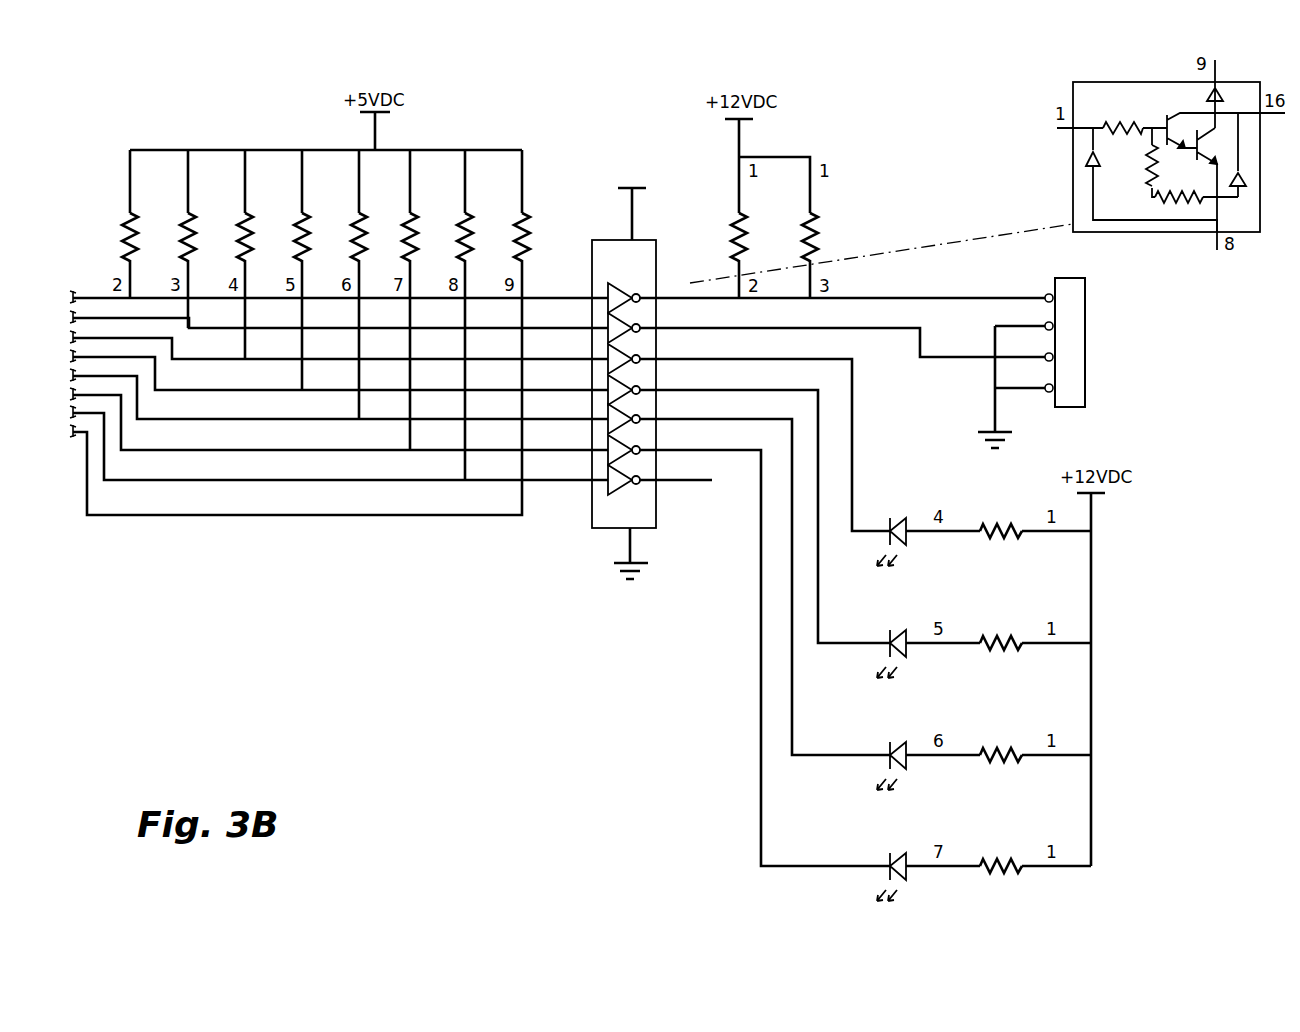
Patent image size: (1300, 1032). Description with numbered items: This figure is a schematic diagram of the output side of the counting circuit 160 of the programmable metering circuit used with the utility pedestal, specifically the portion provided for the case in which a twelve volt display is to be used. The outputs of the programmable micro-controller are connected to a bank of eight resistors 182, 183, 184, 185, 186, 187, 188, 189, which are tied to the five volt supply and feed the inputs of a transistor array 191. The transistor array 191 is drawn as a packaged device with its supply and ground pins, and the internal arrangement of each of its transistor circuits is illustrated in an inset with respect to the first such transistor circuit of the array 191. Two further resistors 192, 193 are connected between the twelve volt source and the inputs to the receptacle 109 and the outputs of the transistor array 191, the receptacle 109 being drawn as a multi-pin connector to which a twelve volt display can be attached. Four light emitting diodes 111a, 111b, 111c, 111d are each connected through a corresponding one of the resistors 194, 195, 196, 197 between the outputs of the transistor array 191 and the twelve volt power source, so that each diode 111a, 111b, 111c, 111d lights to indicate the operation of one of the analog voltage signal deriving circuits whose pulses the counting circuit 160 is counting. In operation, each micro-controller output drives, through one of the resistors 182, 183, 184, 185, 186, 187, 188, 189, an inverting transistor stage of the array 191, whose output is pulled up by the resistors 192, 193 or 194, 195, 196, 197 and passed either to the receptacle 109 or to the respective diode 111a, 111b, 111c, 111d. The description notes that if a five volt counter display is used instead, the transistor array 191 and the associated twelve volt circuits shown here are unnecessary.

The receptacle 109 is at (1086, 398).
The light emitting diode 111a is at (910, 520).
The light emitting diode 111b is at (910, 632).
The light emitting diode 111c is at (910, 744).
The light emitting diode 111d is at (910, 855).
The counting circuit 160 is at (595, 140).
The resistor 182 is at (125, 238).
The resistor 183 is at (183, 238).
The resistor 184 is at (240, 238).
The resistor 185 is at (297, 238).
The resistor 186 is at (354, 238).
The resistor 187 is at (405, 238).
The resistor 188 is at (460, 238).
The resistor 189 is at (517, 238).
The transistor array 191 is at (600, 531).
The resistor 192 is at (733, 233).
The resistor 193 is at (815, 218).
The resistor 194 is at (1008, 522).
The resistor 195 is at (1008, 634).
The resistor 196 is at (1008, 746).
The resistor 197 is at (1008, 857).